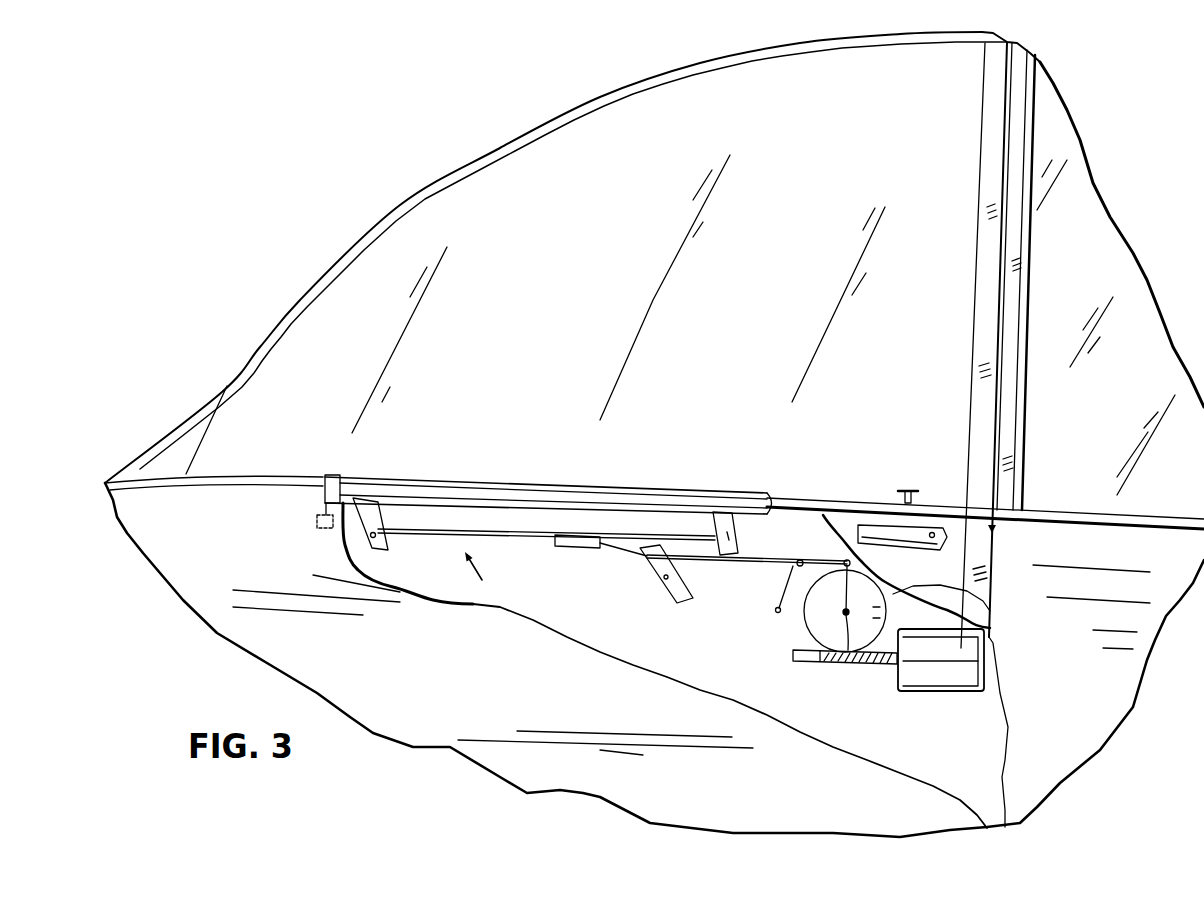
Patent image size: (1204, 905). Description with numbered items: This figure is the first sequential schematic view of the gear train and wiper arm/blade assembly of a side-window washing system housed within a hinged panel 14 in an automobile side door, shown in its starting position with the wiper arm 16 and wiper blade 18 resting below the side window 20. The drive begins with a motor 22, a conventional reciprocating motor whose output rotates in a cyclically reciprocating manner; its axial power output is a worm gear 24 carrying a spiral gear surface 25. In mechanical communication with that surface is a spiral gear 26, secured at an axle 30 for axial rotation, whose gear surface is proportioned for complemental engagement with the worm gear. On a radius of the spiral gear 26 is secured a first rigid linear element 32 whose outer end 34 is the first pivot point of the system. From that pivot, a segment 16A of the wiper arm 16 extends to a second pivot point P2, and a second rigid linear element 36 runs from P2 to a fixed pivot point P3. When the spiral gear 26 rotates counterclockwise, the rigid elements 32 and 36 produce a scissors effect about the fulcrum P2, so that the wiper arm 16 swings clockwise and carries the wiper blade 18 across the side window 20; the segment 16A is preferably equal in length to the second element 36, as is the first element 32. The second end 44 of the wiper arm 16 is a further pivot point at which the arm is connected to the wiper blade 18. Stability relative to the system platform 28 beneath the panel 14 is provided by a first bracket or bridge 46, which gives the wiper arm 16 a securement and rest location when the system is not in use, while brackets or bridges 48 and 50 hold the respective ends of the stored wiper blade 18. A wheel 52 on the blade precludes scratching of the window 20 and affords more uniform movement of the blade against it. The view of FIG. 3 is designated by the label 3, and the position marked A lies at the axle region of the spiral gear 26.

The view direction arrow 3 is at (503, 535).
The hinged panel 14 is at (507, 493).
The wiper arm 16 is at (707, 590).
The segment of wiper arm 16A is at (833, 557).
The wiper blade 18 is at (418, 537).
The side window 20 is at (742, 274).
The motor 22 is at (928, 672).
The worm gear 24 is at (817, 663).
The spiral gear surface 25 is at (867, 665).
The spiral gear 26 is at (990, 633).
The system platform 28 is at (841, 737).
The axle 30 is at (848, 662).
The first rigid linear element 32 is at (990, 611).
The outer end 34 is at (852, 522).
The second rigid linear element 36 is at (705, 600).
The second end 44 is at (580, 532).
The first bracket or bridge 46 is at (667, 583).
The bracket or bridge 48 is at (377, 503).
The bracket or bridge 50 is at (725, 525).
The wheel 52 is at (317, 527).
The pivot axis disc A is at (845, 611).
The pivot point P2 is at (789, 540).
The fixed pivot point P3 is at (739, 616).